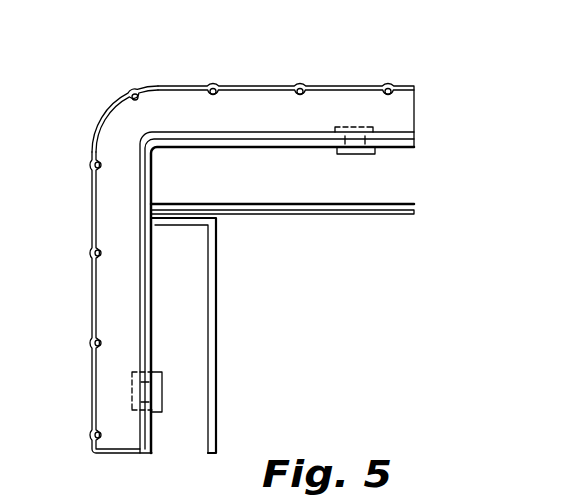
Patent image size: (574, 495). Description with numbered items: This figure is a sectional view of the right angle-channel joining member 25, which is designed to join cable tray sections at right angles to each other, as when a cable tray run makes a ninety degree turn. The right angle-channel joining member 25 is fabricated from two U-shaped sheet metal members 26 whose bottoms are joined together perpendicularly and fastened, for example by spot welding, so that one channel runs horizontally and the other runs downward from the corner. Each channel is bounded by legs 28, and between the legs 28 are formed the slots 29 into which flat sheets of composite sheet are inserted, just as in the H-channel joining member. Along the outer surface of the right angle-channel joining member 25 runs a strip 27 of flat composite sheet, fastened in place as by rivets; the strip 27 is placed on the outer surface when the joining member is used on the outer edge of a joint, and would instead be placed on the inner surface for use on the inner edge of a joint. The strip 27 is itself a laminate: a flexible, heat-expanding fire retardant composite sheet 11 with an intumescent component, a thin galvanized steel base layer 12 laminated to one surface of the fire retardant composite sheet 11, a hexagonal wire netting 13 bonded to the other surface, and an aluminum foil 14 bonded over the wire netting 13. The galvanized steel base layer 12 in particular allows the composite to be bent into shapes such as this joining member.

The fire retardant composite sheet 11 is at (405, 108).
The galvanized steel base layer 12 is at (413, 138).
The hexagonal wire netting 13 is at (215, 87).
The aluminum foil 14 is at (260, 85).
The right angle-channel joining member 25 is at (346, 216).
The U-shaped sheet metal member 26 is at (220, 359).
The strip 27 is at (165, 84).
The legs 28 is at (255, 148).
The slots 29 is at (395, 188).